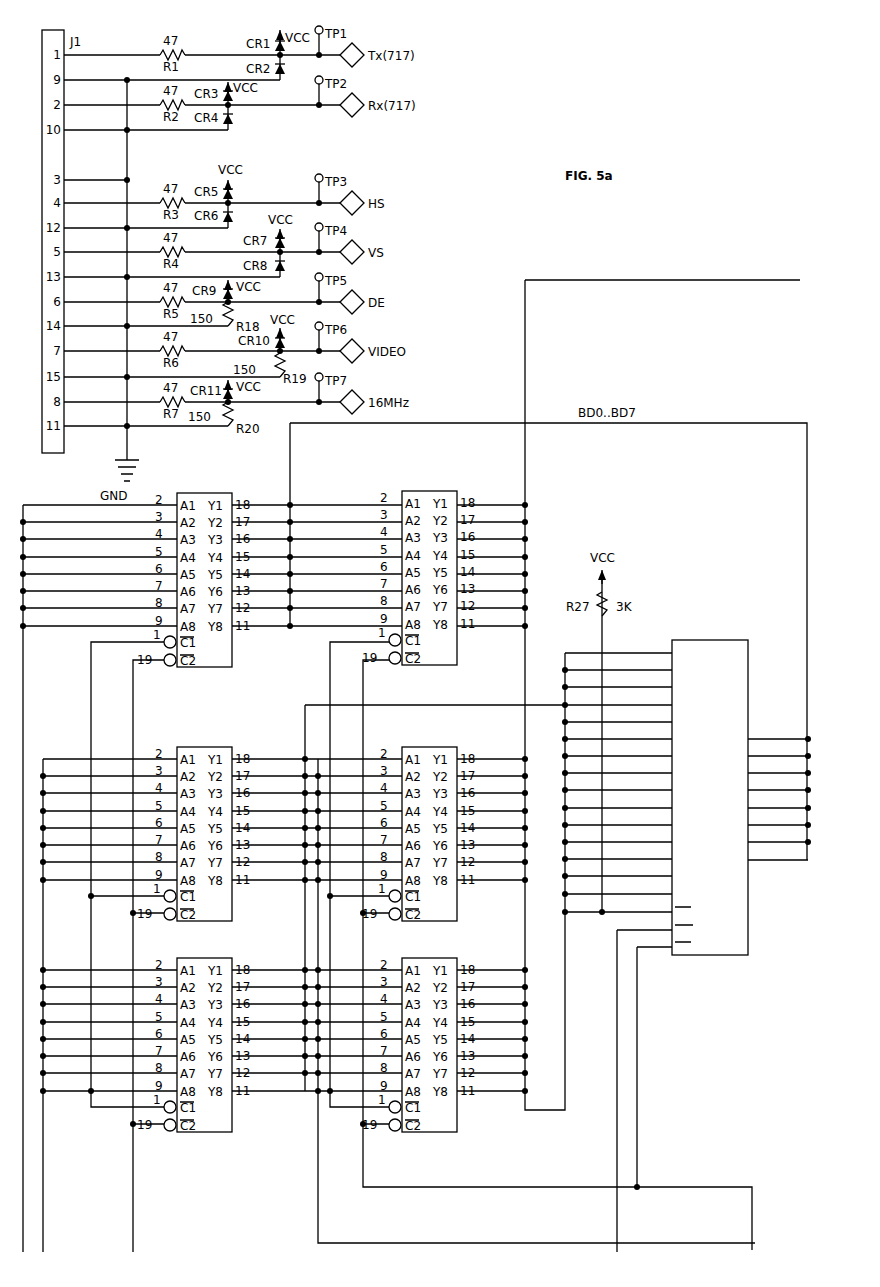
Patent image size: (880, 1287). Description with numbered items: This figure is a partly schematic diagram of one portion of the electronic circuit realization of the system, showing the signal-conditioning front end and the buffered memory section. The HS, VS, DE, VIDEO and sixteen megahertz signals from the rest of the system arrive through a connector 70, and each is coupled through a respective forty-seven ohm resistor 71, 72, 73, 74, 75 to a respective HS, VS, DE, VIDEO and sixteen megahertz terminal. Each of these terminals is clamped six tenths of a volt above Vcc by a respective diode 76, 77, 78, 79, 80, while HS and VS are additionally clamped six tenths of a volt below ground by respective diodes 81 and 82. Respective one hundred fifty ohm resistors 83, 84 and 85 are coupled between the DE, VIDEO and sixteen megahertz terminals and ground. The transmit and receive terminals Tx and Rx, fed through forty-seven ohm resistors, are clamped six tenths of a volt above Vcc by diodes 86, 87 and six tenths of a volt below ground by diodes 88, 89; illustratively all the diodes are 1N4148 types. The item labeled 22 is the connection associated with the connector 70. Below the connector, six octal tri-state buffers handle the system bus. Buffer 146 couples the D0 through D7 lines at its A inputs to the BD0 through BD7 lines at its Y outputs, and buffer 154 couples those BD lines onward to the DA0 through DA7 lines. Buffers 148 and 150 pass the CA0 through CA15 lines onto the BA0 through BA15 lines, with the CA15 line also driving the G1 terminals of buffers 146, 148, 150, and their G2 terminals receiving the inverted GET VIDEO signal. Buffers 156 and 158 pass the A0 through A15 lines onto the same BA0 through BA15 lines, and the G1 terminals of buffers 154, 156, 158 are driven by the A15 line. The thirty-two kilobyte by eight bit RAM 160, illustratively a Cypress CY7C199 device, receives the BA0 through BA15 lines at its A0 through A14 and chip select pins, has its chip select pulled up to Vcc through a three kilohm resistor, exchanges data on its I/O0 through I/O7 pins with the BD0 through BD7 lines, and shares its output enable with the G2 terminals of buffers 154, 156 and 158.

The cable to connector J1 22 is at (78, 53).
The connector 70 is at (44, 452).
The 47 ohm resistor 71 is at (178, 198).
The 47 ohm resistor 72 is at (186, 253).
The 47 ohm resistor 73 is at (180, 300).
The 47 ohm resistor 74 is at (186, 352).
The 47 ohm resistor 75 is at (168, 398).
The diode 76 is at (233, 190).
The diode 77 is at (283, 249).
The diode 78 is at (234, 302).
The diode 79 is at (283, 349).
The diode 80 is at (236, 392).
The diode 81 is at (235, 218).
The diode 82 is at (283, 270).
The 150 ohm resistor 83 is at (236, 314).
The 150 ohm resistor 84 is at (276, 364).
The 150 ohm resistor 85 is at (224, 428).
The diode 86 is at (274, 45).
The diode 87 is at (234, 106).
The diode 88 is at (284, 68).
The diode 89 is at (230, 126).
The octal tri-state buffer 146 is at (232, 493).
The octal tri-state buffer 148 is at (232, 747).
The octal tri-state buffer 150 is at (232, 958).
The octal tri-state buffer 154 is at (457, 491).
The octal tri-state buffer 156 is at (457, 747).
The octal tri-state buffer 158 is at (457, 958).
The 32K×8 bit RAM 160 is at (746, 640).